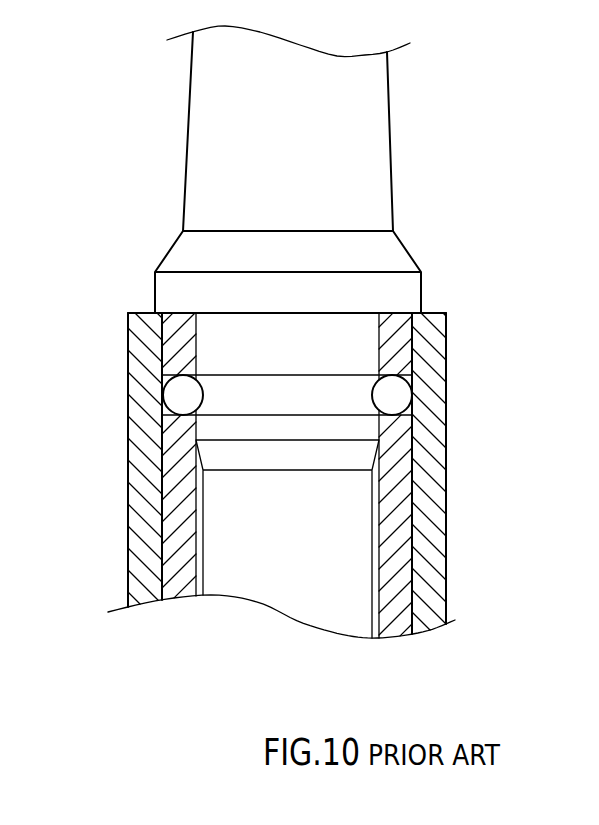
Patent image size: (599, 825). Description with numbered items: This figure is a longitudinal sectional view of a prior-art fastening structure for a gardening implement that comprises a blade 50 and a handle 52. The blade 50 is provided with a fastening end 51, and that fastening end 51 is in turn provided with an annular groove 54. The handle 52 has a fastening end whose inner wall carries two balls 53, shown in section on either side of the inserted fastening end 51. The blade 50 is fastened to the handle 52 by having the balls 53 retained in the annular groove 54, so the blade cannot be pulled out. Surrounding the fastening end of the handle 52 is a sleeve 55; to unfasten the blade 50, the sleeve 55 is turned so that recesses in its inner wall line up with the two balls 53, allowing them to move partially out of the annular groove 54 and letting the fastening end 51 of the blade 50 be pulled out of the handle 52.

The blade 50 is at (369, 130).
The fastening end 51 is at (220, 503).
The handle 52 is at (395, 558).
The balls 53 is at (397, 393).
The annular groove 54 is at (335, 385).
The sleeve 55 is at (447, 442).